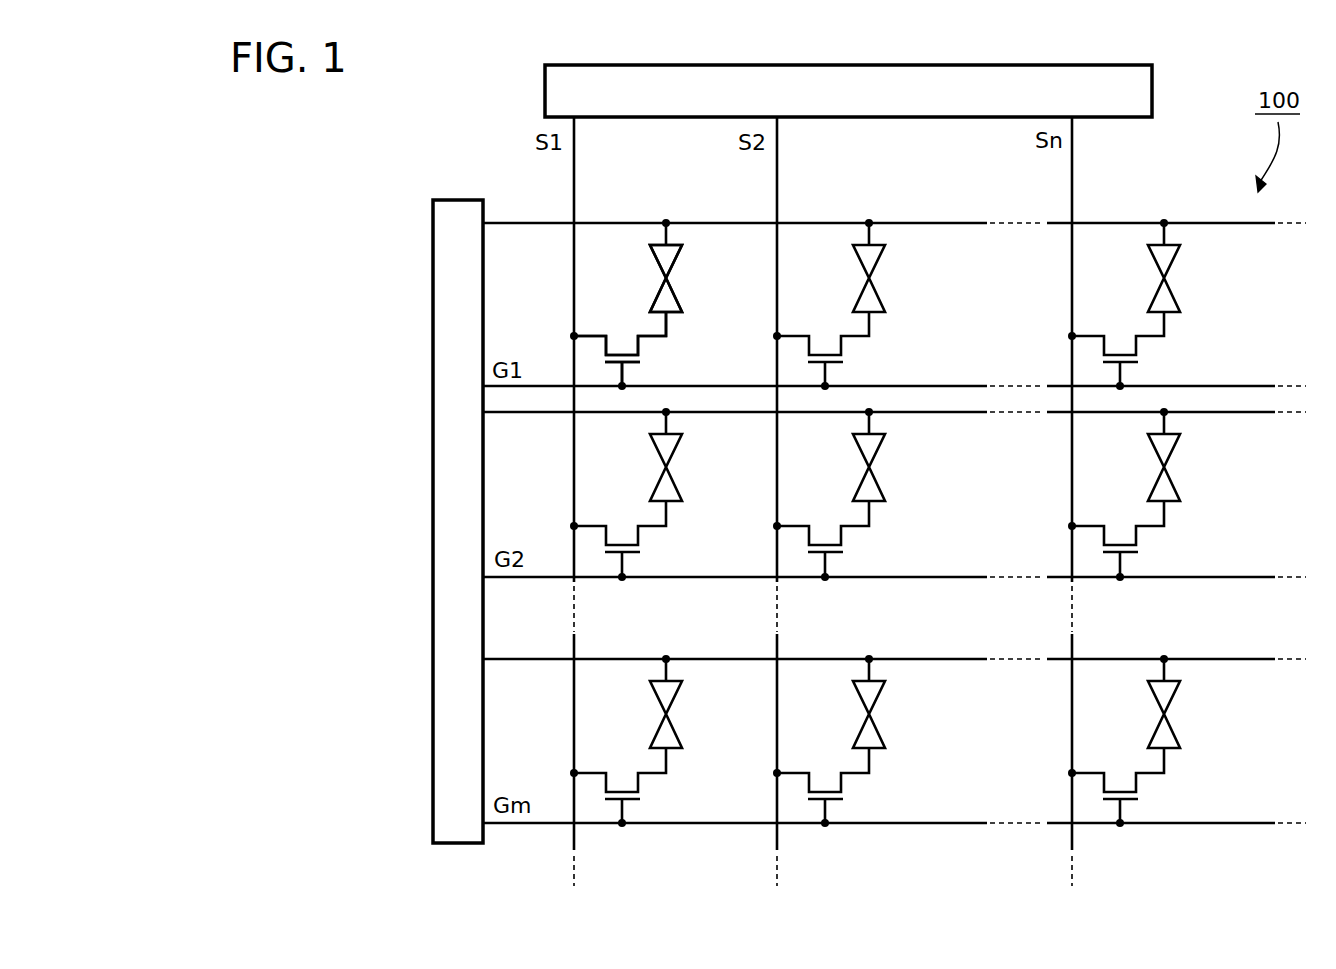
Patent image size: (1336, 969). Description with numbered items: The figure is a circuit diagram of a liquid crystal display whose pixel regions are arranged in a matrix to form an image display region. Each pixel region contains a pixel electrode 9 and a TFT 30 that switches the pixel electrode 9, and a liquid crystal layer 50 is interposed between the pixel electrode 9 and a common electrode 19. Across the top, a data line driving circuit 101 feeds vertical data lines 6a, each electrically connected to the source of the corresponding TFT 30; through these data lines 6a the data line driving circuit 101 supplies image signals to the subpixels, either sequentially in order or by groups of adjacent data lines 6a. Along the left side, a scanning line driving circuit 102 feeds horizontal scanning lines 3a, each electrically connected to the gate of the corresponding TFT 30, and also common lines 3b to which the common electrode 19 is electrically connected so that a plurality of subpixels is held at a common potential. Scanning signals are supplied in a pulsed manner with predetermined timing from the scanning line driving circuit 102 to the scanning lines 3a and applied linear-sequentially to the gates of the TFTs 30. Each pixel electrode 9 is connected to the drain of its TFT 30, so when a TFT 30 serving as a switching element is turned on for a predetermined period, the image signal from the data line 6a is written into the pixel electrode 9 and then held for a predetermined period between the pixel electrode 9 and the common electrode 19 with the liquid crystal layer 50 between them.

The data line driving circuit 101 is at (545, 100).
The scanning line driving circuit 102 is at (457, 200).
The scanning line 3a is at (552, 386).
The common line 3b is at (540, 222).
The data line 6a is at (575, 207).
The pixel electrode 9 is at (670, 324).
The common electrode 19 is at (670, 236).
The TFT 30 is at (646, 359).
The liquid crystal layer 50 is at (632, 278).